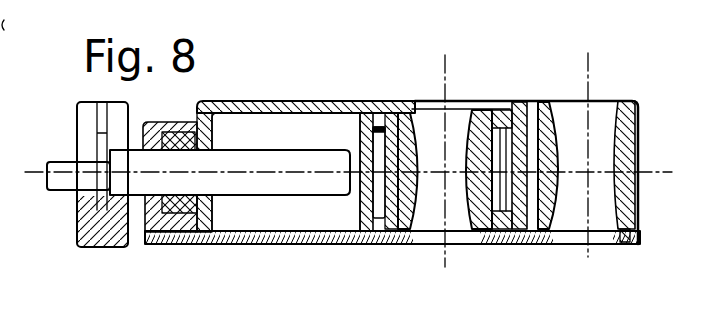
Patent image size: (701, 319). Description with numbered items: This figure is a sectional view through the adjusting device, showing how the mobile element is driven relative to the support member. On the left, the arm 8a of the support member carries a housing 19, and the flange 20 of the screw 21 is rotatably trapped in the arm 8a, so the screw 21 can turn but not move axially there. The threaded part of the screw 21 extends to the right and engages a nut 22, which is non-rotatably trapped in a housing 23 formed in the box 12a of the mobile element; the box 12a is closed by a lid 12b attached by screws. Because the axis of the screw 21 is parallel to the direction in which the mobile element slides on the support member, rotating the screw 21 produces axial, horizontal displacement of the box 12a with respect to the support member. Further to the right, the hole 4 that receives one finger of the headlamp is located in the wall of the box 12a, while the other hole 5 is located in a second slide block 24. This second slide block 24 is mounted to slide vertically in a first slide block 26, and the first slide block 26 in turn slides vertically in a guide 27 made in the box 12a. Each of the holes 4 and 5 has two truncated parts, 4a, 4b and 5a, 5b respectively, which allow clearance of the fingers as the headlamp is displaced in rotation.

The hole 4 is at (595, 98).
The truncated part 4a is at (610, 123).
The truncated part 4b is at (610, 200).
The hole 5 is at (437, 108).
The truncated part 5a is at (463, 128).
The truncated part 5b is at (462, 205).
The arm 8a is at (87, 230).
The box 12a is at (342, 104).
The lid 12b is at (312, 229).
The housing 19 is at (97, 118).
The flange 20 is at (97, 150).
The screw 21 is at (288, 160).
The nut 22 is at (190, 118).
The housing 23 is at (152, 132).
The second slide block 24 is at (487, 121).
The first slide block 26 is at (382, 120).
The guide 27 is at (513, 143).